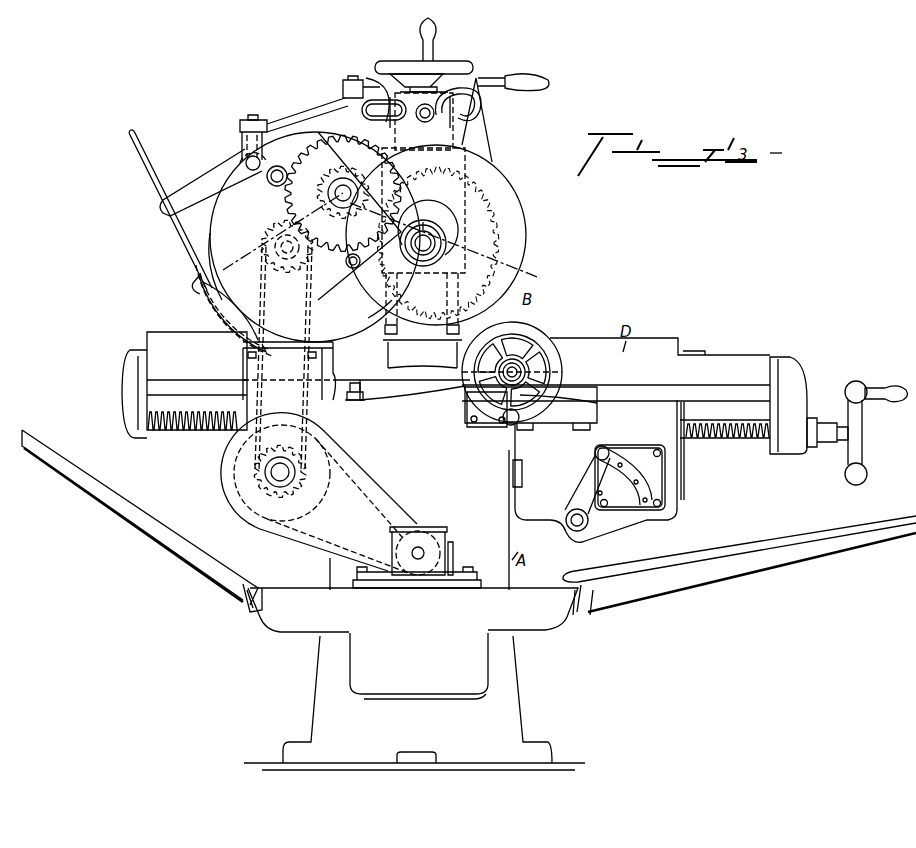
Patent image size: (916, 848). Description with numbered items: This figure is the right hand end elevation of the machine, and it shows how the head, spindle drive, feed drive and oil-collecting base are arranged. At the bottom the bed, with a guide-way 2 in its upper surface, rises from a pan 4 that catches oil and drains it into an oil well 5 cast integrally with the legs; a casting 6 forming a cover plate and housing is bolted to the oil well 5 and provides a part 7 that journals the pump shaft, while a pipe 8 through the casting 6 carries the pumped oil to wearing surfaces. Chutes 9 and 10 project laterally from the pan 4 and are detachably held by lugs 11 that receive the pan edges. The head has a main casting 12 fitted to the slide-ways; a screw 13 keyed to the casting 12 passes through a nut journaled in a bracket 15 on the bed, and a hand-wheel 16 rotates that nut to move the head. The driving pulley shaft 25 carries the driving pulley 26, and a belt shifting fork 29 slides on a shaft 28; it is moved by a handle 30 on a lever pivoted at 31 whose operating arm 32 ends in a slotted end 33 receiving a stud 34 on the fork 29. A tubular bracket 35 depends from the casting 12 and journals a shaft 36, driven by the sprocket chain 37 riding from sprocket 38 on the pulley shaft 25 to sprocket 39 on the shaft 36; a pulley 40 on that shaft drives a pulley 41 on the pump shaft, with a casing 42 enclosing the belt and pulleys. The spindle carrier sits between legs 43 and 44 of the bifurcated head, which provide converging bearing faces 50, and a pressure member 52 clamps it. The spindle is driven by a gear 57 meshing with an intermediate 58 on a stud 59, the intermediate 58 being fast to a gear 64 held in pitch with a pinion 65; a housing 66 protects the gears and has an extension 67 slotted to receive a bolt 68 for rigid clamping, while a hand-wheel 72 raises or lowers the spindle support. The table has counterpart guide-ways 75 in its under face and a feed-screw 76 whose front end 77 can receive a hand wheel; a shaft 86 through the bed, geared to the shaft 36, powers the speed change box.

The guide-way 2 is at (362, 396).
The pan 4 is at (205, 313).
The oil well 5 is at (414, 679).
The casting 6 is at (481, 582).
The part 7 is at (443, 536).
The pipe 8 is at (454, 556).
The chute 9 is at (176, 520).
The chute 10 is at (790, 540).
The lug 11 is at (592, 614).
The main casting 12 is at (422, 355).
The screw 13 is at (522, 368).
The bracket 15 is at (486, 420).
The hand-wheel 16 is at (535, 340).
The driving pulley shaft 25 is at (283, 238).
The driving pulley 26 is at (203, 255).
The shaft 28 is at (246, 160).
The belt shifting fork 29 is at (211, 182).
The handle 30 is at (545, 80).
The pivot 31 is at (349, 78).
The operating arm 32 is at (338, 98).
The slotted end 33 is at (240, 124).
The stud 34 is at (256, 115).
The tubular bracket 35 is at (351, 412).
The shaft 36 is at (279, 485).
The sprocket chain 37 is at (300, 395).
The sprocket 38 is at (287, 260).
The sprocket 39 is at (280, 462).
The pulley 40 is at (318, 498).
The pulley 41 is at (394, 550).
The casing 42 is at (312, 545).
The leg 43 is at (372, 78).
The leg 44 is at (483, 105).
The bearing face 50 is at (463, 330).
The pressure member 52 is at (430, 230).
The gear 57 is at (378, 308).
The intermediate gear 58 is at (343, 193).
The stud 59 is at (343, 204).
The gear 64 is at (332, 140).
The pinion 65 is at (347, 265).
The housing 66 is at (400, 167).
The extension 67 is at (472, 88).
The bolt 68 is at (427, 121).
The hand-wheel 72 is at (448, 66).
The guide-ways 75 is at (224, 390).
The feed-screw 76 is at (740, 440).
The front end 77 is at (842, 440).
The shaft 86 is at (512, 476).